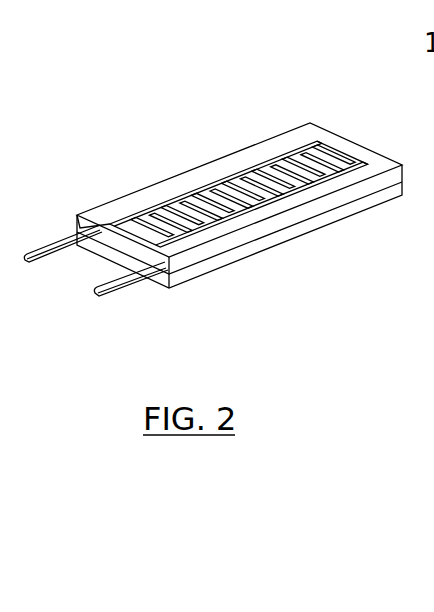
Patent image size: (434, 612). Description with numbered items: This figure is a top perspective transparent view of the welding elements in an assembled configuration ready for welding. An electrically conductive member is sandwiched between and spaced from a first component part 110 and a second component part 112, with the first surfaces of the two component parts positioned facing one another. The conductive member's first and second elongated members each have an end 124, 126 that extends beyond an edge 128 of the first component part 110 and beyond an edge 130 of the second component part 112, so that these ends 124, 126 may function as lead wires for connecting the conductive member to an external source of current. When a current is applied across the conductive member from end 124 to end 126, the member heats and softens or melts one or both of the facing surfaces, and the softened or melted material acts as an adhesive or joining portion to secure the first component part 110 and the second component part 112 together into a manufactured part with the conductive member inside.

The first component part 110 is at (340, 214).
The second component part 112 is at (310, 123).
The end of first elongated member 124 is at (32, 264).
The end of second elongated member 126 is at (102, 297).
The edge of first component part 128 is at (161, 282).
The edge of second component part 130 is at (84, 213).